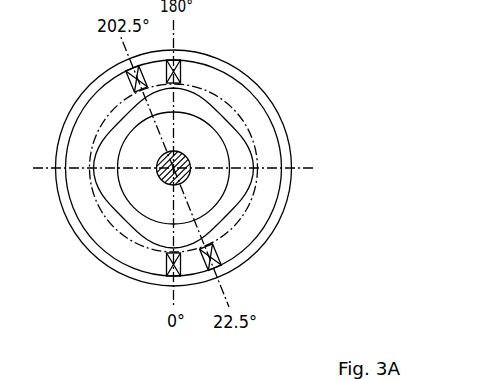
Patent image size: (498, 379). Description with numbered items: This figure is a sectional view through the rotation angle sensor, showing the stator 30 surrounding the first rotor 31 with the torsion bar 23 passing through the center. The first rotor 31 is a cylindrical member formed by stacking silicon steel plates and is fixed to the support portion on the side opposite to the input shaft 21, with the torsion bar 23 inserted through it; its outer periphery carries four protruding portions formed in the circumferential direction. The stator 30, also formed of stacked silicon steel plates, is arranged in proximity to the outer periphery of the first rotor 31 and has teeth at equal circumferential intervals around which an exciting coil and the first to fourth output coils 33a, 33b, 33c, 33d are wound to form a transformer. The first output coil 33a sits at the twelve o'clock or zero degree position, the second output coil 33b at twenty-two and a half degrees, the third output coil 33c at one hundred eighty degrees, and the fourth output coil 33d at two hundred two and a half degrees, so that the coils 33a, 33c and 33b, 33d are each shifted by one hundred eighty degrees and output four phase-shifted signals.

The stator 30 is at (253, 86).
The first rotor 31 is at (243, 156).
The input shaft 21 is at (212, 192).
The torsion bar 23 is at (188, 163).
The first output coil 33a is at (164, 267).
The second output coil 33b is at (217, 252).
The third output coil 33c is at (181, 76).
The fourth output coil 33d is at (126, 87).